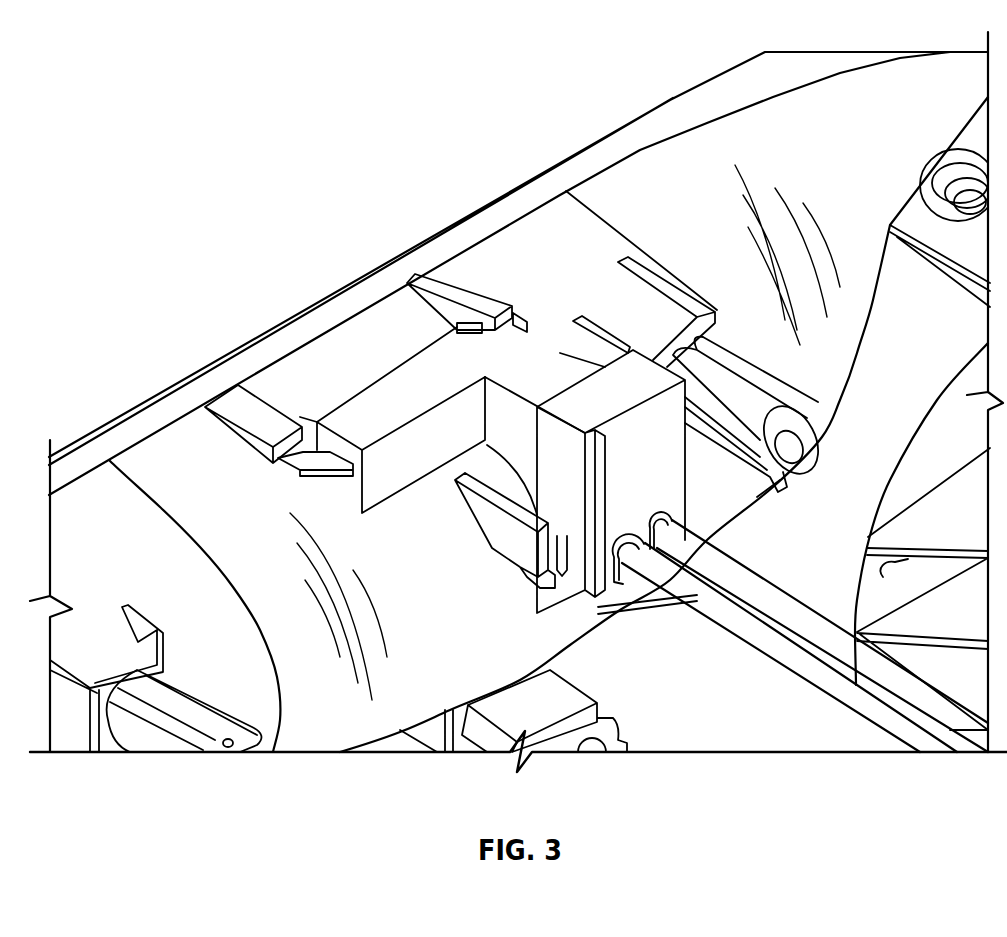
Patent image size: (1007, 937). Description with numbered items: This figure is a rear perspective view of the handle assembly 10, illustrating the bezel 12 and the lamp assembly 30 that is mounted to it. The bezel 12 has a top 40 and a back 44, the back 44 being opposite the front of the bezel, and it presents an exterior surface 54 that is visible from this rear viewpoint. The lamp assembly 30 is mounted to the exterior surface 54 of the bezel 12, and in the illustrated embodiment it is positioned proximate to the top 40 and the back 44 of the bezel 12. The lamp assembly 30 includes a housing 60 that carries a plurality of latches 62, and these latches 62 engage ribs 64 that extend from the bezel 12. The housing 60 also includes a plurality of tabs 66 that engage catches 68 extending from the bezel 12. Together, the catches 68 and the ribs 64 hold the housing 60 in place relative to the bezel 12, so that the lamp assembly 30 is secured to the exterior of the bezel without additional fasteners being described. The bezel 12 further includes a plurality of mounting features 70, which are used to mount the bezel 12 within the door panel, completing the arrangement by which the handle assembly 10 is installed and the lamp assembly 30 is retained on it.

The handle assembly 10 is at (120, 272).
The bezel 12 is at (550, 222).
The lamp assembly 30 is at (479, 340).
The top 40 is at (345, 340).
The back 44 is at (543, 642).
The exterior surface 54 is at (667, 170).
The housing 60 is at (343, 417).
The latches 62 is at (558, 574).
The ribs 64 is at (512, 545).
The tabs 66 is at (310, 463).
The catches 68 is at (233, 407).
The mounting features 70 is at (547, 735).